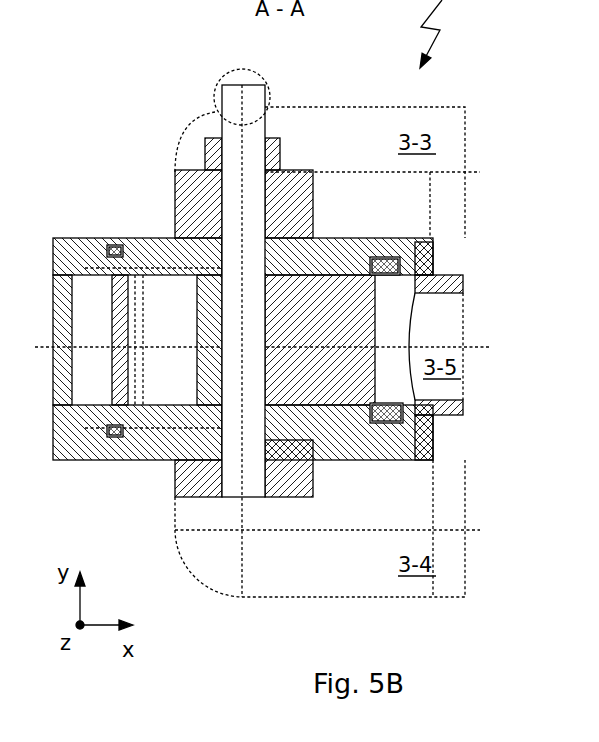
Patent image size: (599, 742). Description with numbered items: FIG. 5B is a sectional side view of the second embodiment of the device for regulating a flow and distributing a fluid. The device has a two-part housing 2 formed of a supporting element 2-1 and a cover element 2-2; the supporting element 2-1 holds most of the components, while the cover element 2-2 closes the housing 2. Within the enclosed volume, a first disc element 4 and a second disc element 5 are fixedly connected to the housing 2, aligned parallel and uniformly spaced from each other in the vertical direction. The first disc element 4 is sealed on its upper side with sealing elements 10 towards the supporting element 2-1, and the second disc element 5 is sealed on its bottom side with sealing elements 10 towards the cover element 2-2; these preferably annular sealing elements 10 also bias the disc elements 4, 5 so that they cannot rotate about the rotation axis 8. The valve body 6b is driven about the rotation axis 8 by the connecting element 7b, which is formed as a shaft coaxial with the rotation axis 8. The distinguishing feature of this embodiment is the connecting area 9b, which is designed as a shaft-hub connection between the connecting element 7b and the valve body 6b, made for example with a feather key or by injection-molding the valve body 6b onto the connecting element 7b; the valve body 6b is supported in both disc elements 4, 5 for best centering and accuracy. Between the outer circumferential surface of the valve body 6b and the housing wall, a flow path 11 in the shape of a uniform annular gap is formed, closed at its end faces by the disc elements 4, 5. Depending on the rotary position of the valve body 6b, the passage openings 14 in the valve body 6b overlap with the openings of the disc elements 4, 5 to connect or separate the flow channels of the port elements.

The housing 2 is at (172, 118).
The supporting element 2-1 is at (203, 190).
The cover element 2-2 is at (192, 481).
The first disc element 4 is at (387, 265).
The second disc element 5 is at (388, 417).
The valve body 6b is at (328, 297).
The connecting element 7b is at (250, 97).
The rotation axis 8 is at (243, 84).
The connecting area 9b is at (283, 460).
The sealing elements 10 is at (207, 250).
The flow path 11 is at (89, 373).
The passage openings 14 is at (157, 323).